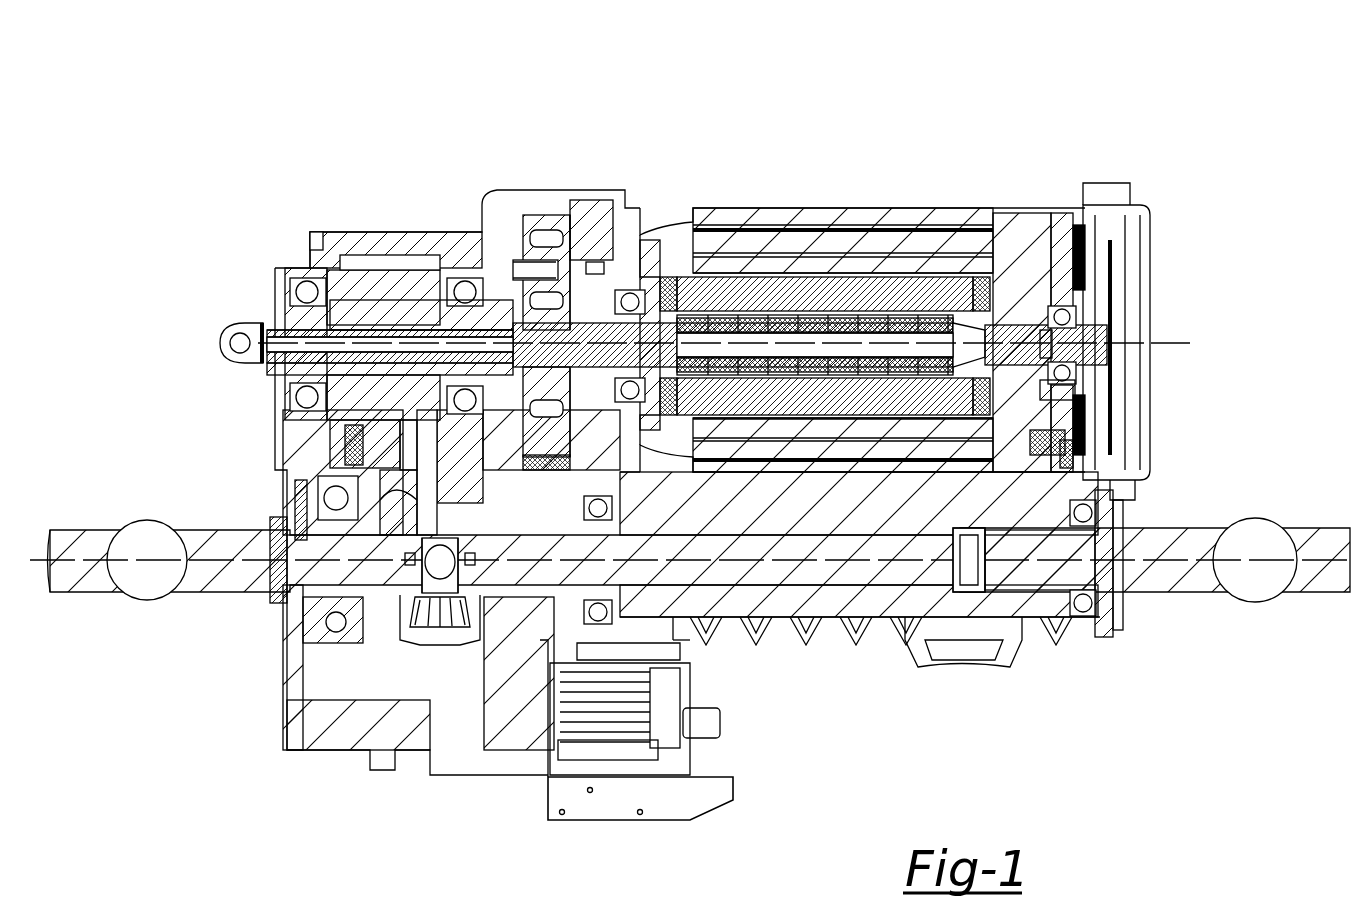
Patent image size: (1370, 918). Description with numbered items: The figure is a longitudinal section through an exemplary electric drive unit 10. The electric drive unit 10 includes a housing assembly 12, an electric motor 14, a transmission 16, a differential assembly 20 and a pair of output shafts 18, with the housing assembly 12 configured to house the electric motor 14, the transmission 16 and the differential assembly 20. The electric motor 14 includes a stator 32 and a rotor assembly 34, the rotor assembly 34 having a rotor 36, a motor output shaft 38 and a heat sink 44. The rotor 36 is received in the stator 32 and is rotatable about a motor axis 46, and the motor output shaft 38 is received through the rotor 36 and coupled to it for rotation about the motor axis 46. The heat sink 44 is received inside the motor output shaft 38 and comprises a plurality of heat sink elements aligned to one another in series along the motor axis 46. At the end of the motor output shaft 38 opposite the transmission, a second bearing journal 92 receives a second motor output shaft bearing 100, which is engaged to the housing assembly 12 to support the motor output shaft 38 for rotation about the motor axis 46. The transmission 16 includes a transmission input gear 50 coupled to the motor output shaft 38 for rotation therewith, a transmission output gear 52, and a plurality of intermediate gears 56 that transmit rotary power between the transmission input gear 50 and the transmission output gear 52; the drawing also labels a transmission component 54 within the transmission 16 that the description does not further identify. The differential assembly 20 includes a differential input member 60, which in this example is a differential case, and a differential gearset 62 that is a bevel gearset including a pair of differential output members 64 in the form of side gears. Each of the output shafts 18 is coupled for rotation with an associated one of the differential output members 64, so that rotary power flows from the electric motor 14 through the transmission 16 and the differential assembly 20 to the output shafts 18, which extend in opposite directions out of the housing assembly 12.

The electric drive unit 10 is at (908, 88).
The housing assembly 12 is at (416, 245).
The electric motor 14 is at (920, 212).
The transmission 16 is at (350, 287).
The output shaft 18 is at (70, 597).
The differential assembly 20 is at (390, 628).
The stator 32 is at (886, 228).
The rotor assembly 34 is at (1055, 420).
The rotor 36 is at (762, 293).
The motor output shaft 38 is at (820, 312).
The heat sink 44 is at (928, 325).
The motor axis 46 is at (1160, 343).
The transmission input gear 50 is at (577, 305).
The transmission output gear 52 is at (330, 405).
The upper gear hub 54 is at (362, 285).
The intermediate gears 56 is at (345, 370).
The differential input member 60 is at (370, 438).
The differential gearset 62 is at (440, 640).
The differential output members 64 is at (370, 520).
The second bearing journal 92 is at (1060, 352).
The second motor output shaft bearing 100 is at (1068, 382).